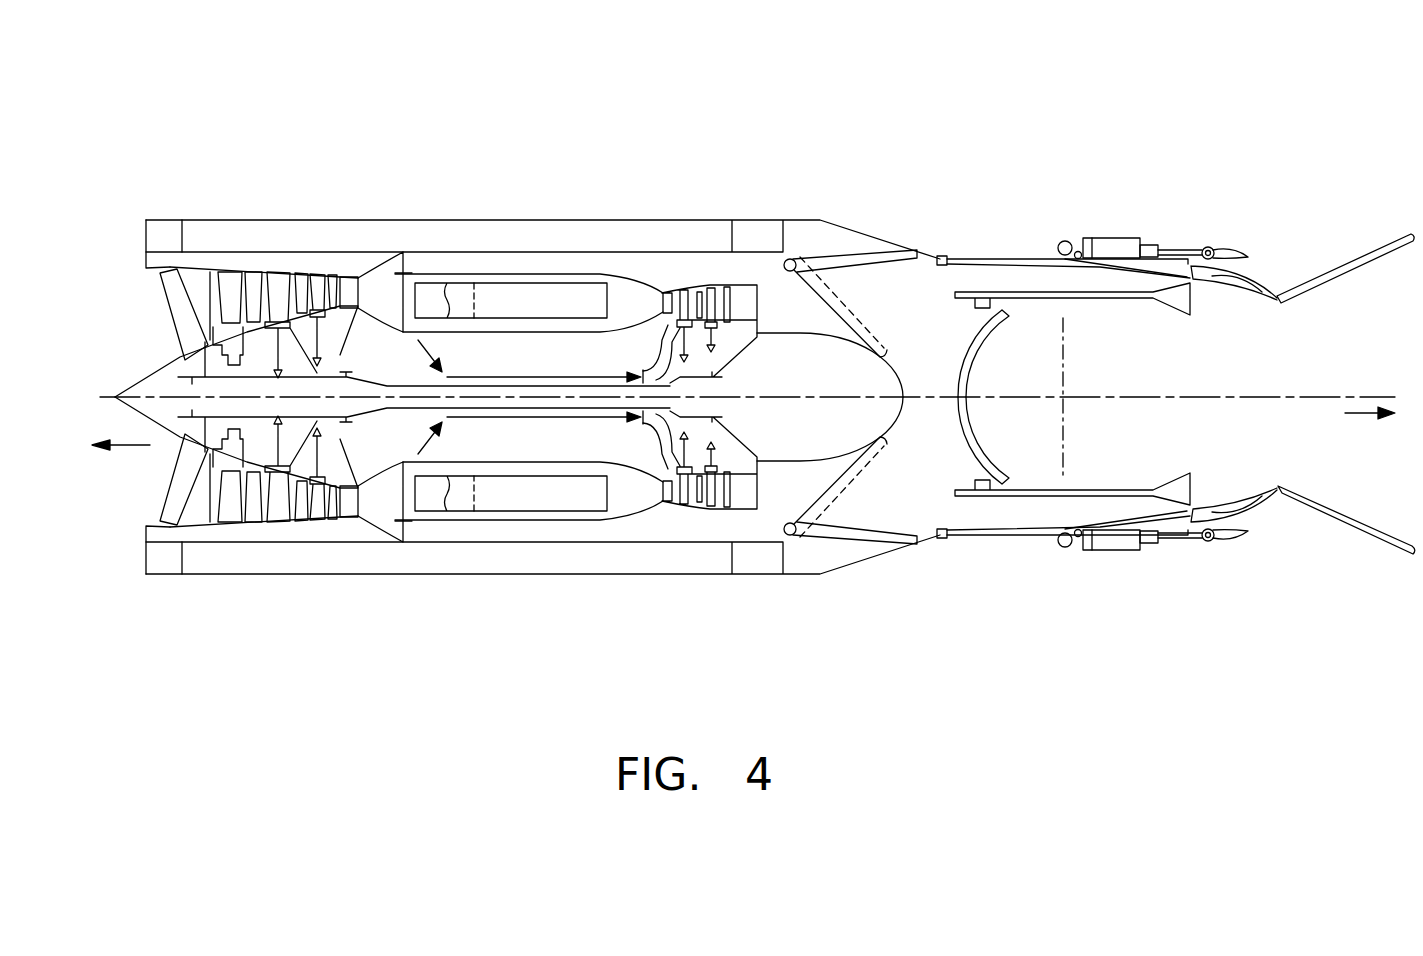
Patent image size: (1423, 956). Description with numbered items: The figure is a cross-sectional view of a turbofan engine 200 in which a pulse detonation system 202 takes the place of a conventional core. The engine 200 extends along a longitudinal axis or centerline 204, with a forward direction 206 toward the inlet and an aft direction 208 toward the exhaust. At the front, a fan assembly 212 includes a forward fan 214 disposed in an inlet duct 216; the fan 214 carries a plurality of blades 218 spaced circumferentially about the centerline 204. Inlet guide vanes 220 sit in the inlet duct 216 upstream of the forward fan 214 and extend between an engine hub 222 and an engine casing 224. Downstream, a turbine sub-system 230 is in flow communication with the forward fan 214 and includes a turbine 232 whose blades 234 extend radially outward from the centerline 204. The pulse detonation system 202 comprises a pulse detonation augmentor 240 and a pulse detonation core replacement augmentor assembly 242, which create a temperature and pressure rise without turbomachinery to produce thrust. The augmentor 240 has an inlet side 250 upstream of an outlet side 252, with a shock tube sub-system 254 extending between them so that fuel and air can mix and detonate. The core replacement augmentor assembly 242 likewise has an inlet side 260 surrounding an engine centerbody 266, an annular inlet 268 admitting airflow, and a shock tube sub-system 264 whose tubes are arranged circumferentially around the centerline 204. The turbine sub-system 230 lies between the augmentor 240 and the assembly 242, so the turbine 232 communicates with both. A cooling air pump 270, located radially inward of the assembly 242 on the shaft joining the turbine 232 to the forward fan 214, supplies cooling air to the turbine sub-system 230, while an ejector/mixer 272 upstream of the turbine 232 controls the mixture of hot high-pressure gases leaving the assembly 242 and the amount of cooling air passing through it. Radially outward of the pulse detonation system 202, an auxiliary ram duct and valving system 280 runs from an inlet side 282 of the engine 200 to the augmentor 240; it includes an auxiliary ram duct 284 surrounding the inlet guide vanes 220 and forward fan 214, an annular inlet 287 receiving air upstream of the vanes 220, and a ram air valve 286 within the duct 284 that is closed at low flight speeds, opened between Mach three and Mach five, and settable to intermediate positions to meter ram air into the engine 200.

The turbofan engine 200 is at (243, 105).
The pulse detonation system 202 is at (1012, 208).
The centerline 204 is at (182, 347).
The forward direction 206 is at (122, 446).
The aft direction 208 is at (1362, 414).
The fan assembly 212 is at (317, 260).
The forward fan 214 is at (228, 512).
The inlet duct 216 is at (147, 523).
The blades 218 is at (195, 280).
The inlet guide vanes 220 is at (177, 310).
The engine hub 222 is at (158, 373).
The engine casing 224 is at (203, 260).
The turbine sub-system 230 is at (706, 508).
The turbine 232 is at (707, 290).
The blades 234 is at (740, 262).
The pulse detonation augmentor 240 is at (1018, 280).
The pulse detonation core replacement augmentor assembly 242 is at (458, 300).
The inlet side 250 is at (950, 352).
The outlet side 252 is at (1190, 297).
The shock tube sub-system 254 is at (1048, 495).
The inlet side 260 is at (398, 298).
The shock tube sub-system 264 is at (457, 262).
The engine centerbody 266 is at (900, 410).
The annular inlet 268 is at (390, 495).
The cooling air pump 270 is at (657, 358).
The ejector/mixer 272 is at (630, 506).
The auxiliary ram duct and valving system 280 is at (838, 546).
The inlet side 282 is at (131, 268).
The auxiliary ram duct 284 is at (438, 562).
The ram air valve 286 is at (852, 252).
The inlet 287 is at (143, 553).